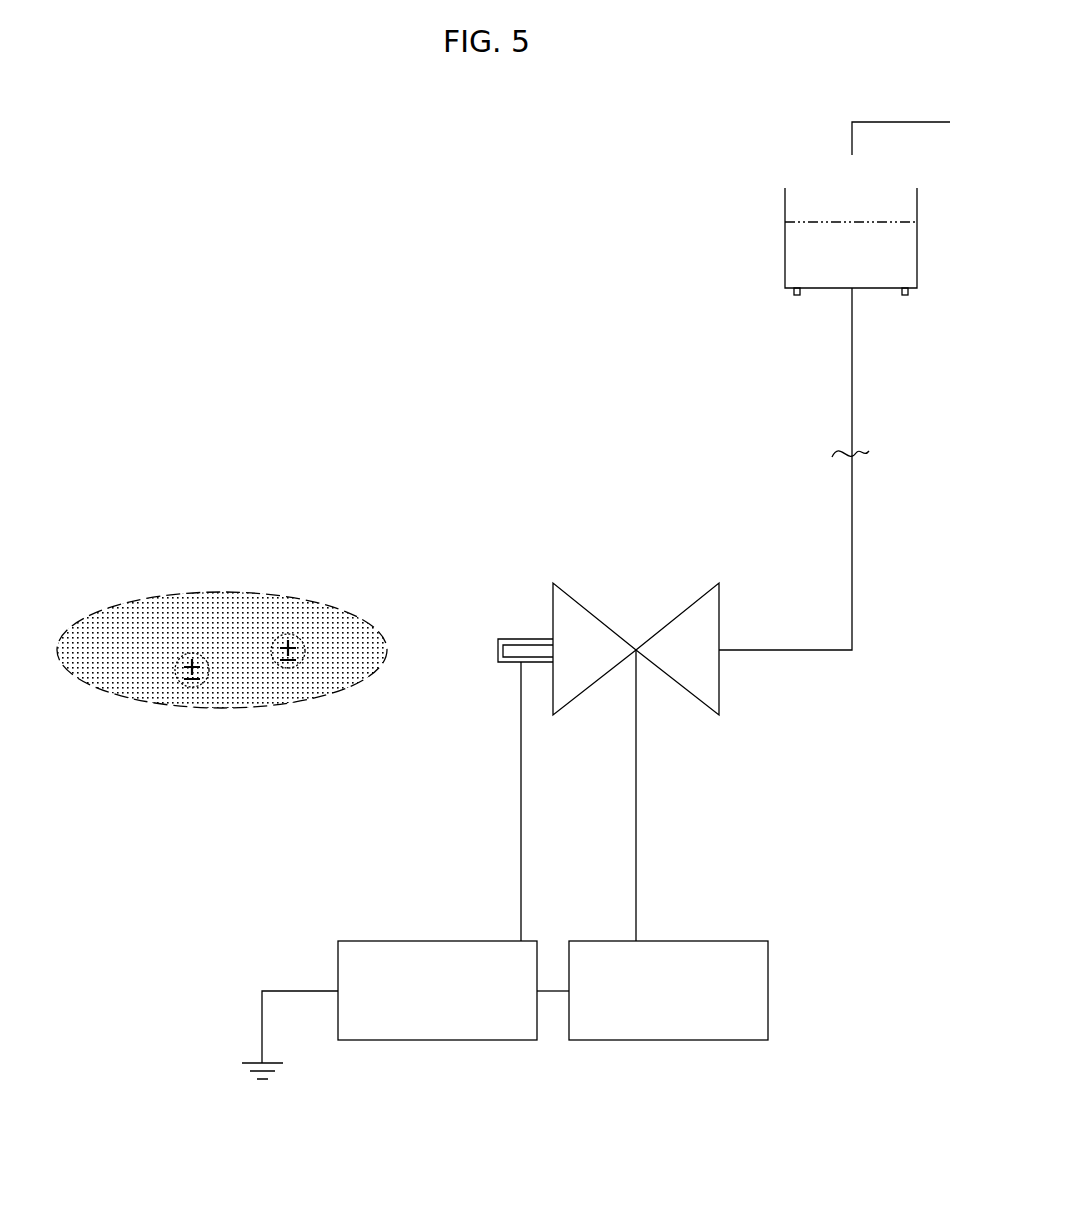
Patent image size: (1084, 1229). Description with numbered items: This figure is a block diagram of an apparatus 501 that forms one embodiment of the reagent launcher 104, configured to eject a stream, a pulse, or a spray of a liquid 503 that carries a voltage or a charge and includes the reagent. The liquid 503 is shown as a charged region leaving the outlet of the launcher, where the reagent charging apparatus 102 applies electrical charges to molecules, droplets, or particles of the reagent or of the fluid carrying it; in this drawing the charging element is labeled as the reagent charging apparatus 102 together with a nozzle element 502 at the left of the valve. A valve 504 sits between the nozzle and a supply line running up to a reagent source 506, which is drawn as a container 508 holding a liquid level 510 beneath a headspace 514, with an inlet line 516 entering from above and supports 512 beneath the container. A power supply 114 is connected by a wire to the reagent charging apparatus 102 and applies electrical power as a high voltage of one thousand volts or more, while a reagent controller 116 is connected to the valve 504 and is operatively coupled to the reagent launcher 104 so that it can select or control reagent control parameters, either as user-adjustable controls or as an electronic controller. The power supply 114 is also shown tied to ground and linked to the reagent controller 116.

The apparatus 501 is at (418, 162).
The liquid 503 is at (454, 470).
The power supply 114 is at (192, 690).
The reagent launcher 104 is at (745, 470).
The reagent charging apparatus 102 is at (493, 620).
The nozzle 502 is at (516, 639).
The valve 504 is at (683, 605).
The reagent source 506 is at (668, 157).
The headspace 514 is at (752, 157).
The gas inlet 516 is at (852, 136).
The liquid reagent level 510 is at (812, 222).
The reagent container 508 is at (785, 262).
The container supports 512 is at (797, 296).
The reagent controller 116 is at (652, 990).